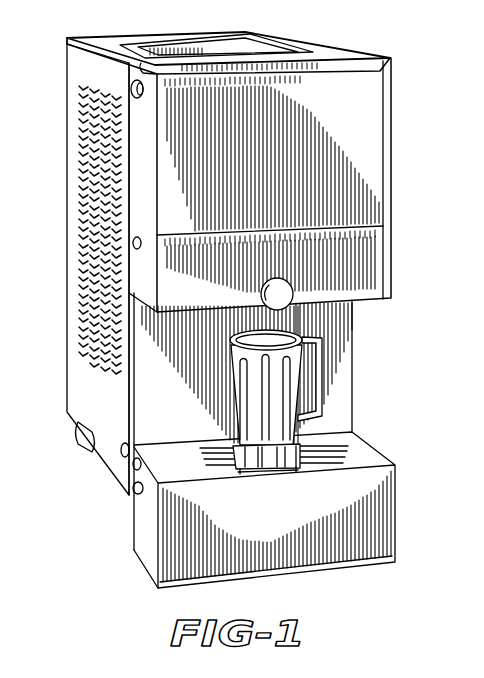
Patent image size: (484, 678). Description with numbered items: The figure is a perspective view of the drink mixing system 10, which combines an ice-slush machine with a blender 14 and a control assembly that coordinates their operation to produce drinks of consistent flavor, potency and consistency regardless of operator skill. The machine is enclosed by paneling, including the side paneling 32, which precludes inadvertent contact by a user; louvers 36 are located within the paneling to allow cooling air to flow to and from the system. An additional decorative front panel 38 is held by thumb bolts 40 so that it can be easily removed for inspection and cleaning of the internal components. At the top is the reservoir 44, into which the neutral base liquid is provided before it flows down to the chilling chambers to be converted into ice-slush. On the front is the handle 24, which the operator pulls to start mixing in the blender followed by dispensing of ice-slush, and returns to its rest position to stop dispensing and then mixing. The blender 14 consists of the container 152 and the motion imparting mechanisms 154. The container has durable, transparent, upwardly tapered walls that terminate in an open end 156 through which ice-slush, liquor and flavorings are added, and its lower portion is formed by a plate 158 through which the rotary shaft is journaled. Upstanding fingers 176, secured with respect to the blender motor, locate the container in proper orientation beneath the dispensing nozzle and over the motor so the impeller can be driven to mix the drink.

The drink mixing system 10 is at (401, 150).
The blender 14 is at (232, 398).
The handle 24 is at (288, 279).
The side paneling 32 is at (72, 63).
The louvers 36 is at (80, 175).
The decorative front panel 38 is at (145, 134).
The thumb bolts 40 is at (141, 100).
The reservoir 44 is at (266, 50).
The container 152 is at (296, 396).
The motion imparting mechanisms 154 is at (303, 455).
The open end 156 is at (293, 327).
The plate 158 is at (276, 469).
The upstanding fingers 176 is at (270, 477).